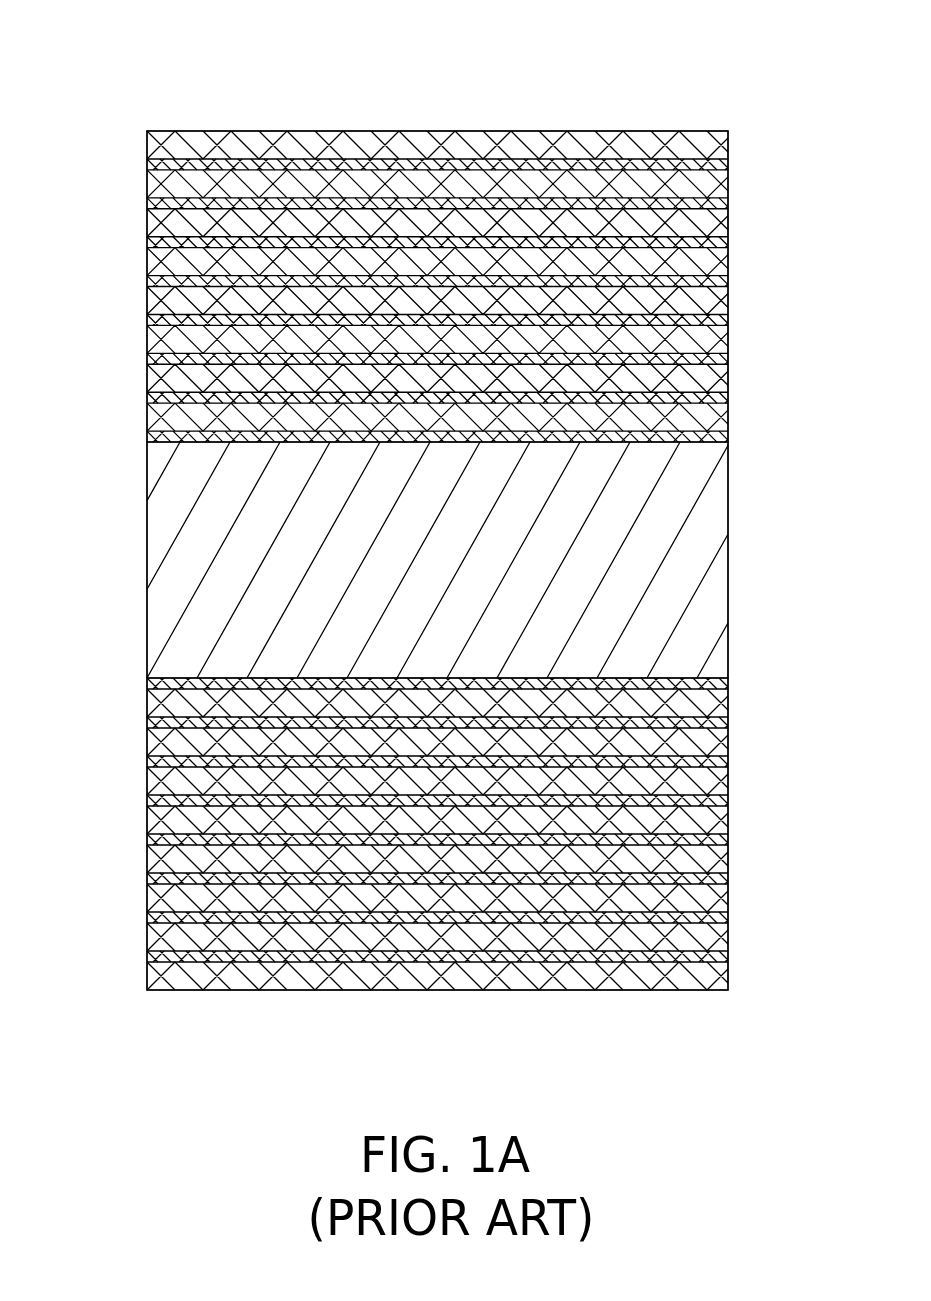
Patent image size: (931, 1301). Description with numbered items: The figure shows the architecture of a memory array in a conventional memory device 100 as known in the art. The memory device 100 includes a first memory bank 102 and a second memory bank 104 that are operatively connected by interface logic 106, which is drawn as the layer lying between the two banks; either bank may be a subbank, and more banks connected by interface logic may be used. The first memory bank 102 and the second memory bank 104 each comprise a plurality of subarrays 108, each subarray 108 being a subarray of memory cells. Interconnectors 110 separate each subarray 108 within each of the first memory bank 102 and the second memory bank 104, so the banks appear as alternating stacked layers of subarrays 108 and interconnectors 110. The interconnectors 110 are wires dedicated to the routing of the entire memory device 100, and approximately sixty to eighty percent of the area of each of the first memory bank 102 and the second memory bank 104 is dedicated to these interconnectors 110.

The memory device 100 is at (417, 38).
The first memory bank 102 is at (741, 682).
The second memory bank 104 is at (741, 131).
The interface logic 106 is at (741, 446).
The subarray 108 is at (147, 976).
The interconnectors 110 is at (147, 956).